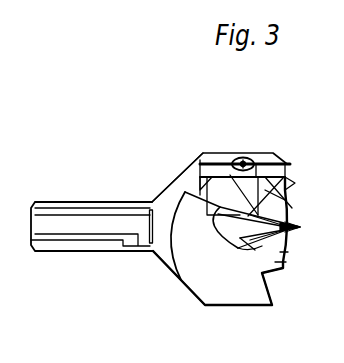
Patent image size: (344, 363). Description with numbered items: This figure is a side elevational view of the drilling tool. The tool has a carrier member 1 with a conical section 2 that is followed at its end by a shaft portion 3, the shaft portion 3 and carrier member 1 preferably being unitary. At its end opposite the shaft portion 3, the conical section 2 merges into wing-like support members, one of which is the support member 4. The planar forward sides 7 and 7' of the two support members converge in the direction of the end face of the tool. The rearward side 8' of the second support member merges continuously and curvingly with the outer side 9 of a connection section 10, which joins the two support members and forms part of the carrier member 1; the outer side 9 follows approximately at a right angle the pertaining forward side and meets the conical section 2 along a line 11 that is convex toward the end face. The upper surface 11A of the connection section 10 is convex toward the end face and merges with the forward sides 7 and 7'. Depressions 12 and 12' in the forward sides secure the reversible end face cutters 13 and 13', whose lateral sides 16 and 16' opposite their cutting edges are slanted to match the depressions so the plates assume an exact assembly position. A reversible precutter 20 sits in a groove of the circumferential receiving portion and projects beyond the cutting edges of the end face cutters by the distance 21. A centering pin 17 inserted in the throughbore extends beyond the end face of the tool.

The carrier member 1 is at (237, 305).
The conical section 2 is at (171, 194).
The shaft portion 3 is at (85, 212).
The support member 4 is at (288, 184).
The forward side 7 is at (281, 209).
The forward side 7' is at (291, 240).
The rearward side 8' is at (275, 310).
The outer side 9 is at (185, 240).
The connection section 10 is at (168, 279).
The line 11 is at (158, 252).
The upper surface 11A is at (238, 243).
The depression 12 is at (297, 181).
The depression 12' is at (298, 275).
The reversible end face cutter 13 is at (260, 156).
The reversible end face cutter 13' is at (301, 256).
The lateral side 16 is at (230, 164).
The lateral side 16' is at (237, 266).
The centering pin 17 is at (222, 222).
The reversible precutter 20 is at (278, 160).
The distance 21 is at (292, 222).